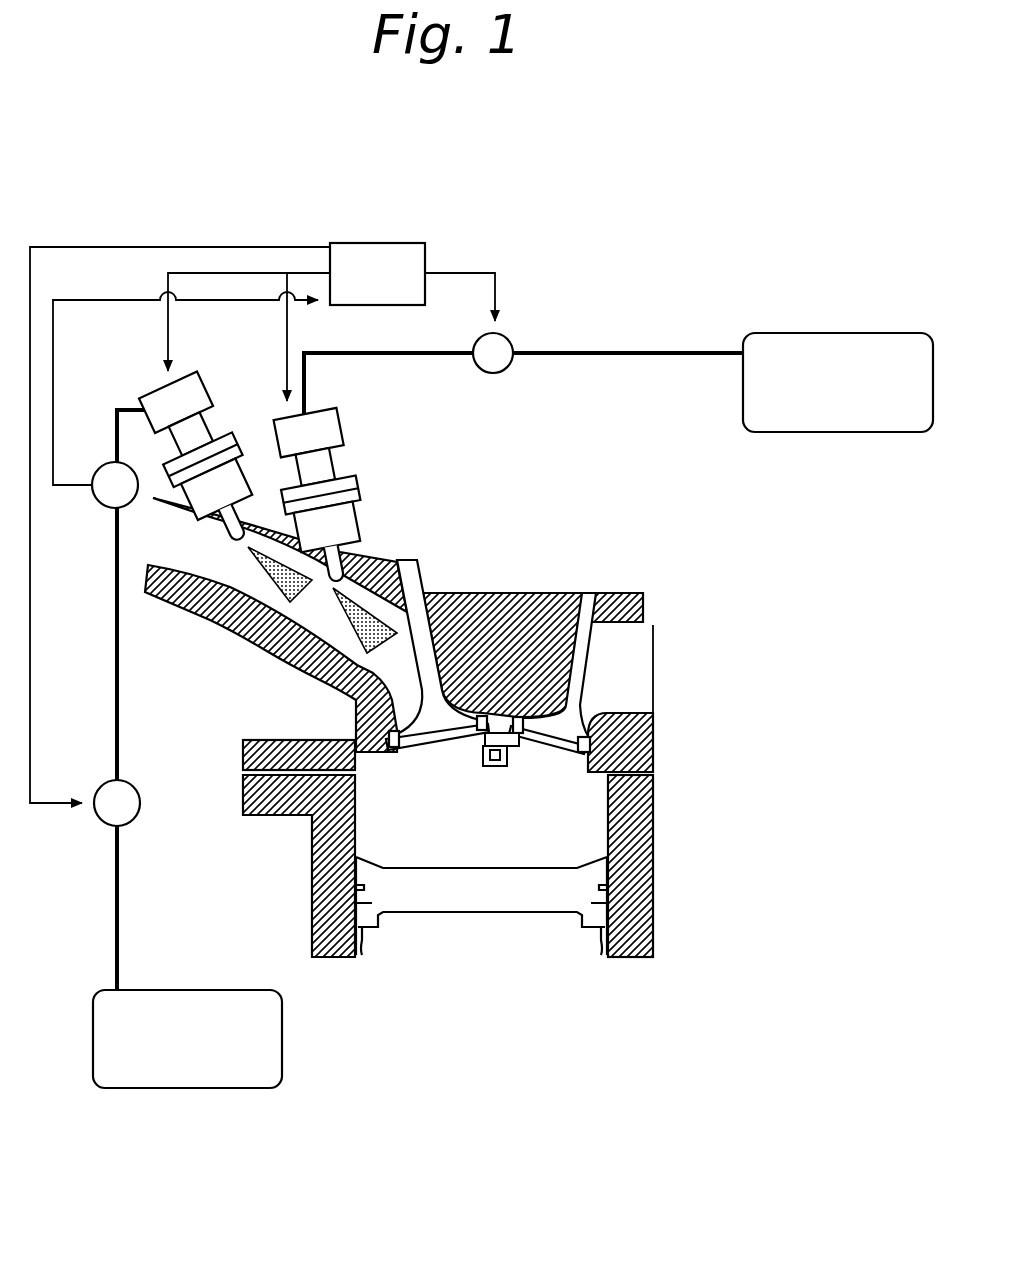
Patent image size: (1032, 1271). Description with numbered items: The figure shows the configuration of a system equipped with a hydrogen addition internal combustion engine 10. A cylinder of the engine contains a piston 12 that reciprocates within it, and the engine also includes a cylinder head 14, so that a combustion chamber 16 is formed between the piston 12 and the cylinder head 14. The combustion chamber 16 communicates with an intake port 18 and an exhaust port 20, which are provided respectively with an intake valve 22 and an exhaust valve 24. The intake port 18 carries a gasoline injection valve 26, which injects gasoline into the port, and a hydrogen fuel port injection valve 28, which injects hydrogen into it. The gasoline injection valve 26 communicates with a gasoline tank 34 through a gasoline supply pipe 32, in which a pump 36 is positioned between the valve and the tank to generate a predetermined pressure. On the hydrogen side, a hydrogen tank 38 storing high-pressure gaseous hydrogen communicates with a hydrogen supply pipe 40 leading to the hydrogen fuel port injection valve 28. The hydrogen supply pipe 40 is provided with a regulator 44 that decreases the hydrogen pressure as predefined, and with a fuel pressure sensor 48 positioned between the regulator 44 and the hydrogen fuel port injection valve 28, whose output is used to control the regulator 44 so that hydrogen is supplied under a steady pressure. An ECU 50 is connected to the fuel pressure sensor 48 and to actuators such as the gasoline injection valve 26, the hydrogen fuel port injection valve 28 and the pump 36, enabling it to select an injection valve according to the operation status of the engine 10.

The hydrogen addition internal combustion engine 10 is at (668, 818).
The piston 12 is at (500, 895).
The cylinder head 14 is at (480, 627).
The combustion chamber 16 is at (593, 843).
The intake port 18 is at (170, 560).
The exhaust port 20 is at (610, 637).
The intake valve 22 is at (410, 585).
The exhaust valve 24 is at (593, 612).
The gasoline injection valve 26 is at (360, 467).
The hydrogen fuel port injection valve 28 is at (218, 433).
The gasoline supply pipe 32 is at (612, 350).
The gasoline tank 34 is at (808, 333).
The pump 36 is at (506, 336).
The hydrogen tank 38 is at (282, 1030).
The hydrogen supply pipe 40 is at (117, 940).
The regulator 44 is at (130, 825).
The fuel pressure sensor 48 is at (100, 466).
The ECU 50 is at (425, 246).